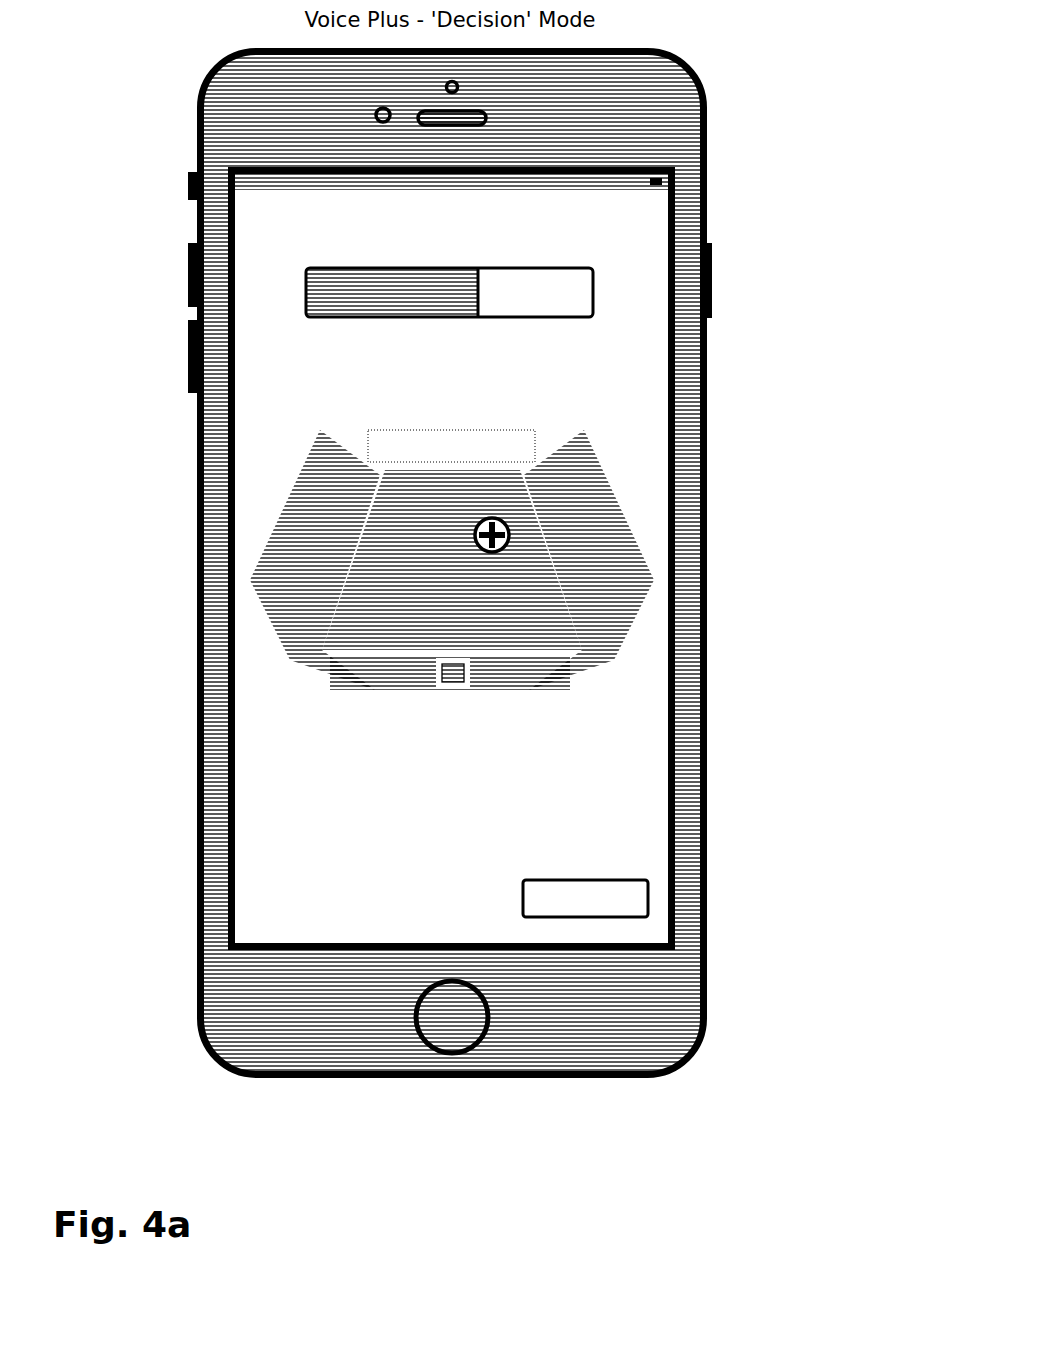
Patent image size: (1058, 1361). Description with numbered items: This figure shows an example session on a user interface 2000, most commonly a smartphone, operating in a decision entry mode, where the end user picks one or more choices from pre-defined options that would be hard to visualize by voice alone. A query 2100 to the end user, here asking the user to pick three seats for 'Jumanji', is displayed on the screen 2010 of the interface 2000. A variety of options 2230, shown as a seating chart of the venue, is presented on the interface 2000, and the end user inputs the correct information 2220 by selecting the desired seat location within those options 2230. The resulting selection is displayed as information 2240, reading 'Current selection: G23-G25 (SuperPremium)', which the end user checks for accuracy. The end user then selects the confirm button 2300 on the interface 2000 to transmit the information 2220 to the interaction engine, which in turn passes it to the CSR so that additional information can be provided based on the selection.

The user interface 2000 is at (518, 563).
The screen 2010 is at (540, 559).
The query 2100 is at (632, 403).
The information 2220 is at (510, 537).
The options 2230 is at (550, 640).
The information 2240 is at (598, 795).
The confirm button 2300 is at (648, 900).